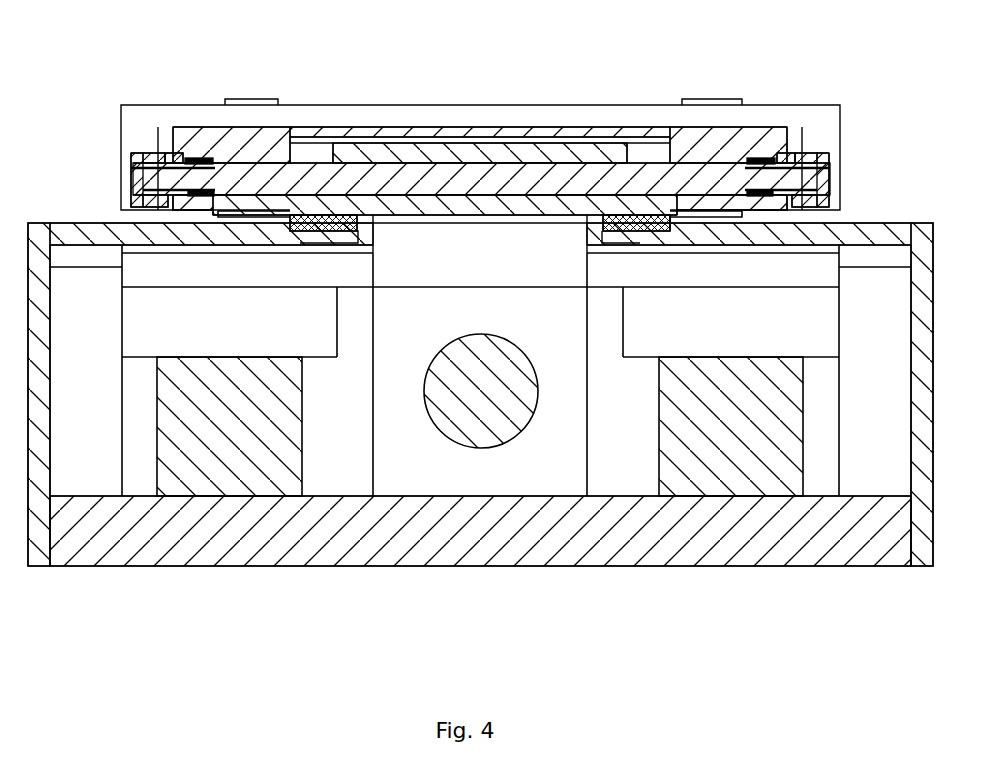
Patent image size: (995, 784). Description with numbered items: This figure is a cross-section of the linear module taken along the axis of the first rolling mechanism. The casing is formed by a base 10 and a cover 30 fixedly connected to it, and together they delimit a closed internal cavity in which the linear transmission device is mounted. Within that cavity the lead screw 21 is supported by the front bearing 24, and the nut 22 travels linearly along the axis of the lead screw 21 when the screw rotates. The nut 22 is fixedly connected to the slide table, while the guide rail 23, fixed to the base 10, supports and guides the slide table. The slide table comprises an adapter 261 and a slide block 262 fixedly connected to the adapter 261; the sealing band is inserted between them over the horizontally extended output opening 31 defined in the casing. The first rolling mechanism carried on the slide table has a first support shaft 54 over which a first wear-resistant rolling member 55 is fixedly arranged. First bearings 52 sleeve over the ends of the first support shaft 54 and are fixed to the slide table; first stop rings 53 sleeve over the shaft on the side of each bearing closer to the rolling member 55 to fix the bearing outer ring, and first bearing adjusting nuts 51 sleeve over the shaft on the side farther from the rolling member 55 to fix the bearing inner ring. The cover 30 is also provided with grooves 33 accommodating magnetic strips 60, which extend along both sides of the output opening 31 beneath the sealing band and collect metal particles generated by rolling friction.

The base 10 is at (220, 543).
The lead screw 21 is at (480, 426).
The nut 22 is at (538, 465).
The guide rail 23 is at (726, 465).
The front bearing 24 is at (320, 465).
The cover 30 is at (40, 523).
The output opening 31 is at (260, 233).
The grooves 33 is at (613, 232).
The first bearing adjusting nuts 51 is at (157, 163).
The first bearings 52 is at (180, 165).
The first stop rings 53 is at (198, 180).
The first support shaft 54 is at (200, 168).
The first wear-resistant rolling member 55 is at (310, 155).
The magnetic strips 60 is at (315, 228).
The adapter 261 is at (417, 133).
The slide block 262 is at (482, 118).